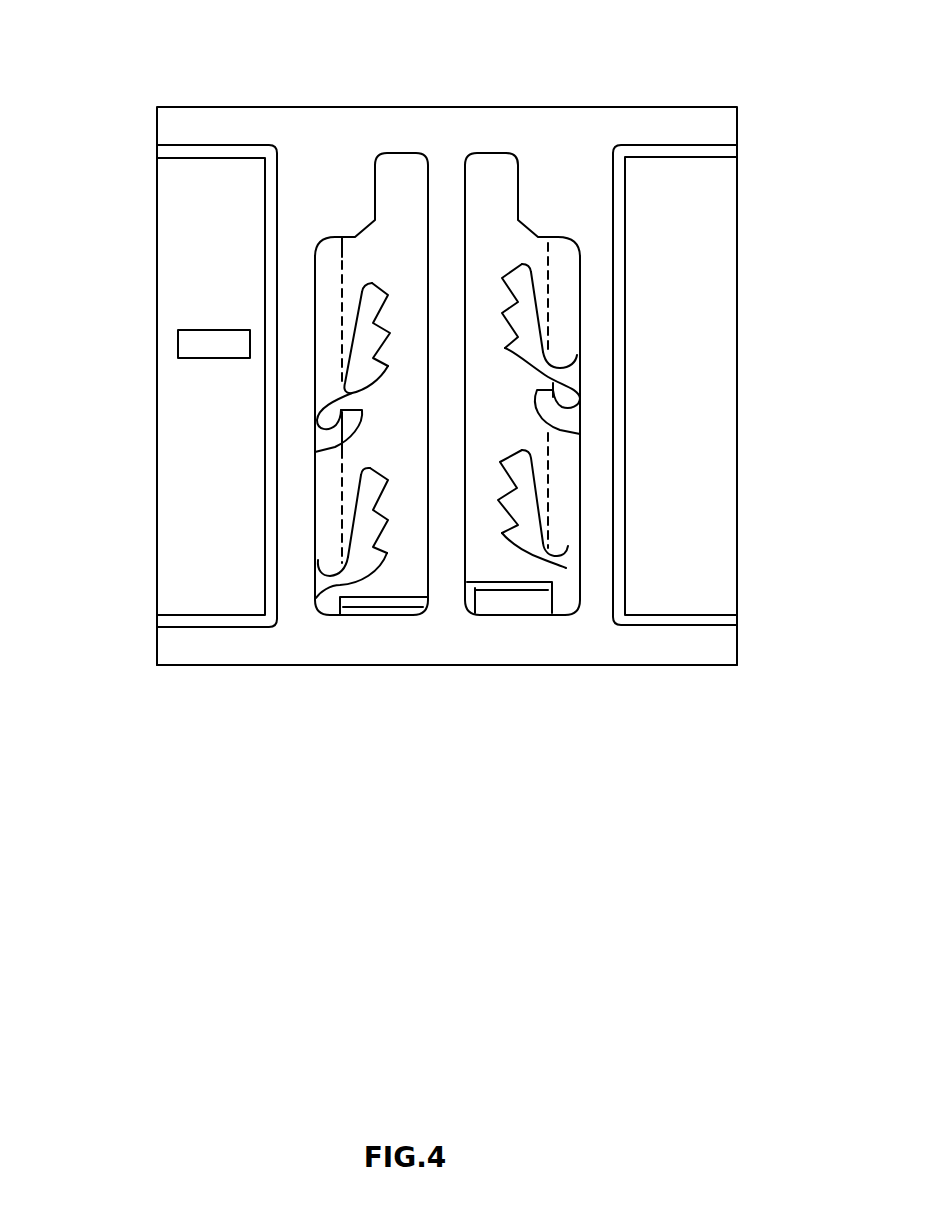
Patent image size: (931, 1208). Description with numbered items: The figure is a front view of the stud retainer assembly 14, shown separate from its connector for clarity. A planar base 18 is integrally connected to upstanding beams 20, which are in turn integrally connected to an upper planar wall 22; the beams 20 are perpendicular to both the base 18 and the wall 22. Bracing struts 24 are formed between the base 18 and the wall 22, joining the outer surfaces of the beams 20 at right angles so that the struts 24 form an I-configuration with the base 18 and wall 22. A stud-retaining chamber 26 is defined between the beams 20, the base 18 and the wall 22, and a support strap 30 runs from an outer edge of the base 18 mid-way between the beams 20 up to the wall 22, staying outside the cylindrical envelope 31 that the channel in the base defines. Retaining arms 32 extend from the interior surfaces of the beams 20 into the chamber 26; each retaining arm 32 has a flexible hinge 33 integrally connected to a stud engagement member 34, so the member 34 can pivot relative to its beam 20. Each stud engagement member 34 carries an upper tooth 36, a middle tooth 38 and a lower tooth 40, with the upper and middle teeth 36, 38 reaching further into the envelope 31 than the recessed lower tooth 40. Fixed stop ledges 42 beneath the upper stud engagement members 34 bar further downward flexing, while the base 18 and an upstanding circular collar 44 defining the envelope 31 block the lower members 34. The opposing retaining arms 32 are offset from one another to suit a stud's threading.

The stud retainer assembly 14 is at (182, 58).
The planar base 18 is at (680, 665).
The upstanding beams 20 is at (275, 528).
The upper planar wall 22 is at (680, 105).
The bracing struts 24 is at (170, 248).
The stud-retaining chamber 26 is at (487, 230).
The support straps 30 is at (450, 195).
The cylindrical envelope 31 is at (345, 256).
The retaining arms 32 is at (363, 322).
The hinge 33 is at (338, 390).
The stud engagement member 34 is at (370, 300).
The upper tooth 36 is at (533, 283).
The middle tooth 38 is at (502, 313).
The lower tooth 40 is at (507, 350).
The fixed stop ledges 42 is at (325, 448).
The upstanding circular collar 44 is at (403, 602).